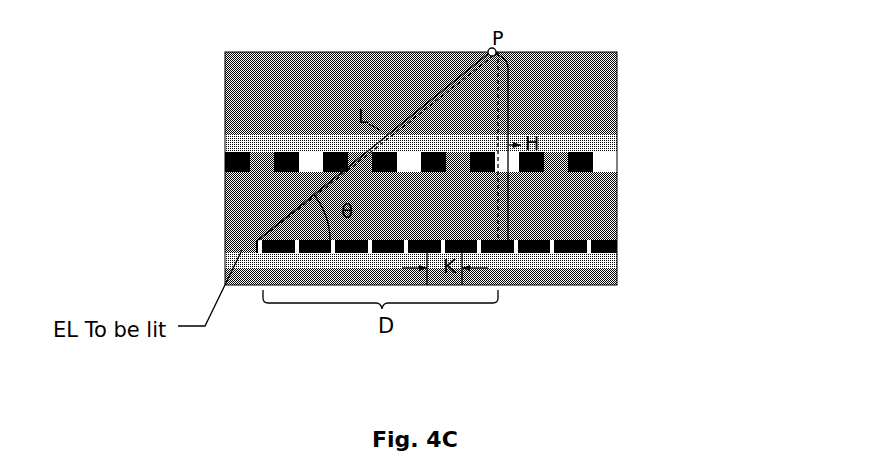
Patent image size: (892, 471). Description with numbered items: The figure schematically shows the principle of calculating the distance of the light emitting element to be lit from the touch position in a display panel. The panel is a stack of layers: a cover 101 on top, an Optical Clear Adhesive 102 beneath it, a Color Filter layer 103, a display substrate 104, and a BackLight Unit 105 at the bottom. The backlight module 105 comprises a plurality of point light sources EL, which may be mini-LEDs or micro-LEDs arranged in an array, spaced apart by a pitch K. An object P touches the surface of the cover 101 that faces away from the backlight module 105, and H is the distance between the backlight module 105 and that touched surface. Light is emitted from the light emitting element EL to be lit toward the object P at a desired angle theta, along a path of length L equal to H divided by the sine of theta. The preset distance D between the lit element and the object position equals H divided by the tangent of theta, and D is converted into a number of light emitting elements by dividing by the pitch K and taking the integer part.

The cover 101 is at (617, 88).
The Optical Clear Adhesive 102 is at (617, 143).
The Color Filter layer 103 is at (617, 165).
The display substrate 104 is at (617, 192).
The BackLight Unit 105 is at (620, 218).